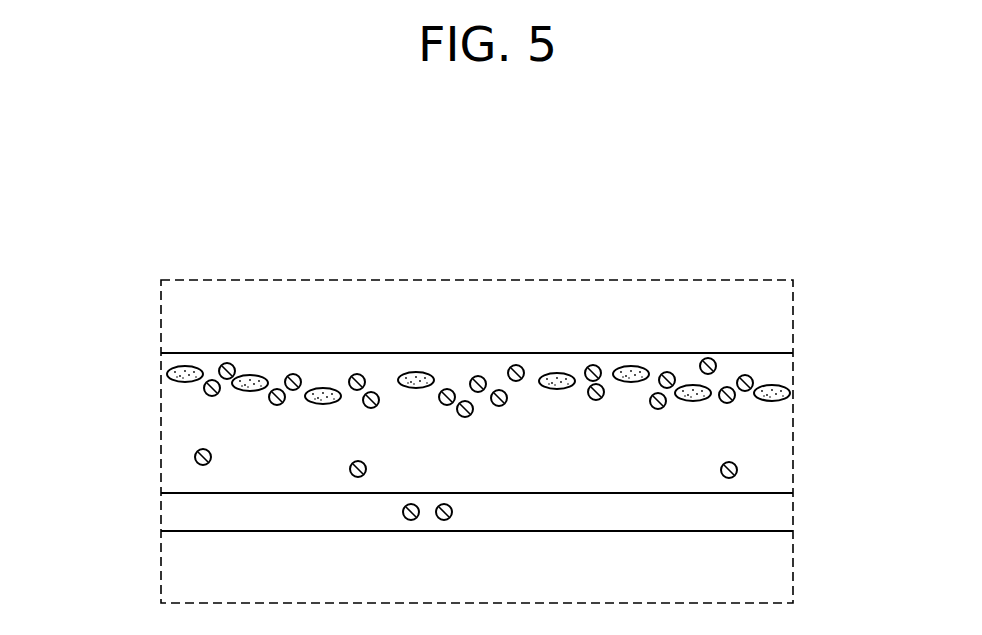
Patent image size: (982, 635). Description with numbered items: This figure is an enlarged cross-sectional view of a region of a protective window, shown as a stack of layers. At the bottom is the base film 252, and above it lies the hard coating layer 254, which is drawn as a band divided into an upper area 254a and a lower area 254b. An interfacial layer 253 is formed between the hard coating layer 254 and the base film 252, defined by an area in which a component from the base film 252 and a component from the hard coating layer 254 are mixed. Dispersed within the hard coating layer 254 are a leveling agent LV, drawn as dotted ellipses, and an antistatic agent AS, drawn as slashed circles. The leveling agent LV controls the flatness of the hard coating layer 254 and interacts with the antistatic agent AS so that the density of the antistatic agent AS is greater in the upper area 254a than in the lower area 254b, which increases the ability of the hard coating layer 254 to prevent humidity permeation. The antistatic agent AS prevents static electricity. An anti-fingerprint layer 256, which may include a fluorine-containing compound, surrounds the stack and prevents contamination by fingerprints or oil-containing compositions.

The base film 252 is at (792, 576).
The interfacial layer 253 is at (792, 517).
The hard coating layer 254 is at (85, 368).
The upper area of the hard coating layer 254a is at (155, 355).
The lower area of the hard coating layer 254b is at (155, 425).
The anti-fingerprint layer 256 is at (792, 315).
The antistatic agent AS is at (294, 373).
The leveling agent LV is at (415, 379).